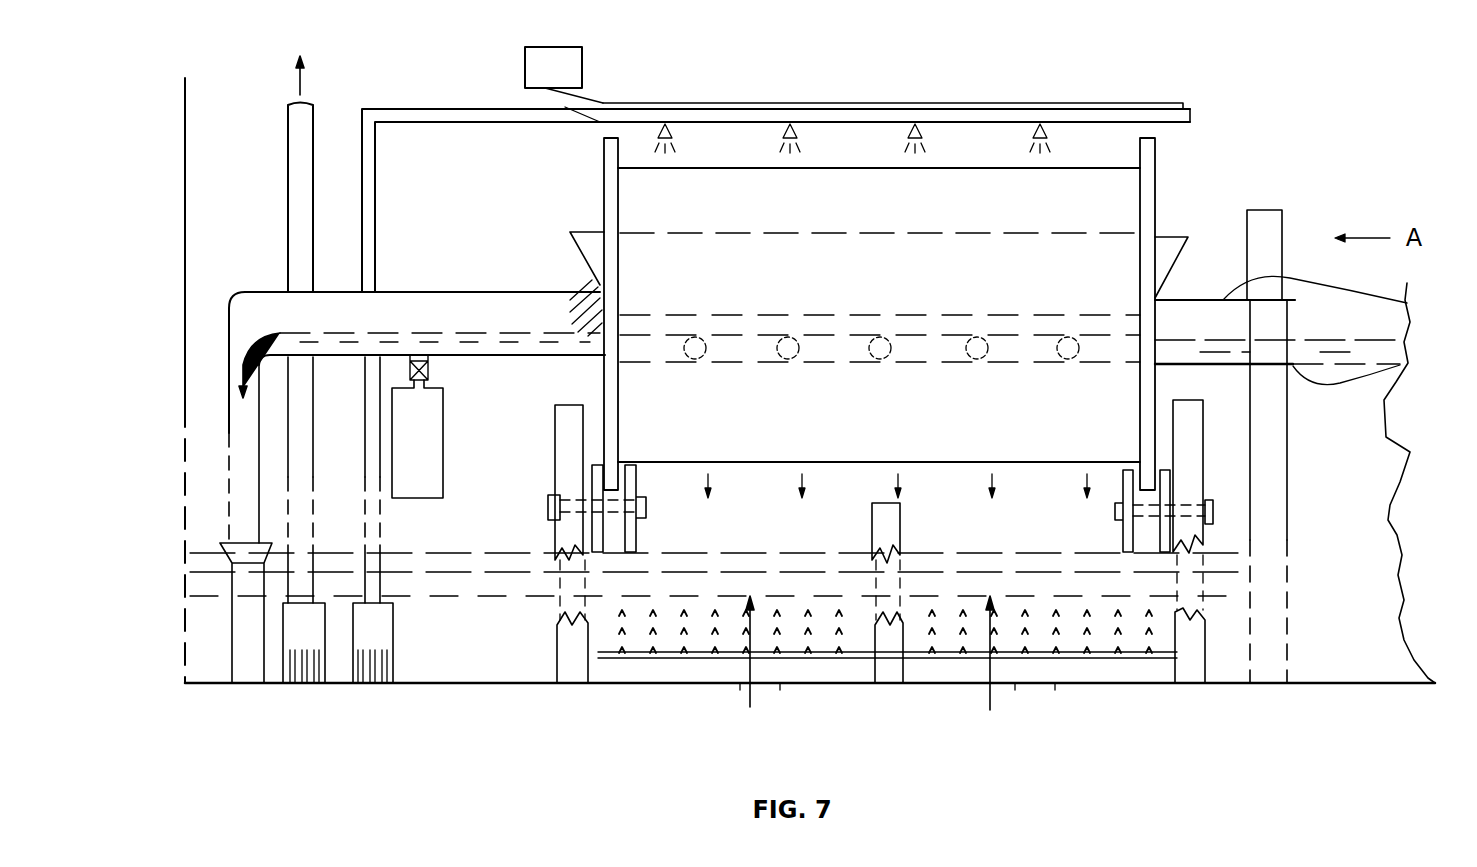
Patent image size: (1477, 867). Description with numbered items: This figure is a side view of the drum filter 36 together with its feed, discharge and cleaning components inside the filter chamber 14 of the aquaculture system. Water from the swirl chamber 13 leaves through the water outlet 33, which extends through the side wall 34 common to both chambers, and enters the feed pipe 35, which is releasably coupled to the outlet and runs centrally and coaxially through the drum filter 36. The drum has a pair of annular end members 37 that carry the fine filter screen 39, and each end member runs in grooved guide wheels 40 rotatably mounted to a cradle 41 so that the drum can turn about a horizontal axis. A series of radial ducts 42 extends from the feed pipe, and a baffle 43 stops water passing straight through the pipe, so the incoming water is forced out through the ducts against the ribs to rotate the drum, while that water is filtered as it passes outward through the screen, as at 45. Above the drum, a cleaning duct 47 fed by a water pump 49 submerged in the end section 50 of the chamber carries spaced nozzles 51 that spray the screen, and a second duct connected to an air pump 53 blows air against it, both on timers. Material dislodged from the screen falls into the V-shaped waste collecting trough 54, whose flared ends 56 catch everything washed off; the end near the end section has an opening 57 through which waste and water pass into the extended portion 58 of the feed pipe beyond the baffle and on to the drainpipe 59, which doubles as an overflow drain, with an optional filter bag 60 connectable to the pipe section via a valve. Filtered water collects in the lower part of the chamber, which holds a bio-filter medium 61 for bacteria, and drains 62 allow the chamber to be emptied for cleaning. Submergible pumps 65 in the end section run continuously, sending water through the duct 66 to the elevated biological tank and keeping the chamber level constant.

The swirl chamber 13 is at (1377, 515).
The filter chamber 14 is at (187, 318).
The water outlet 33 is at (1403, 363).
The side wall 34 is at (1277, 447).
The feed pipe 35 is at (1407, 305).
The drum filter 36 is at (1192, 145).
The annular end members 37 is at (1160, 148).
The filter screen 39 is at (1088, 182).
The guide wheels 40 is at (1135, 560).
The cradle 41 is at (1203, 645).
The radial ducts 42 is at (878, 342).
The baffle 43 is at (600, 350).
The filtered water flow 45 is at (961, 530).
The water cleaning duct 47 is at (960, 108).
The water pump 49 is at (368, 683).
The end section 50 is at (236, 240).
The nozzles 51 is at (1052, 125).
The air pump 53 is at (575, 70).
The waste collecting trough 54 is at (719, 228).
The trough ends 56 is at (1187, 252).
The opening 57 is at (585, 292).
The extended portion of feed pipe 58 is at (252, 290).
The drainpipe 59 is at (252, 683).
The filter bag 60 is at (418, 485).
The bio-filter medium 61 is at (660, 640).
The drains 62 is at (1036, 728).
The submergible pumps 65 is at (312, 683).
The duct 66 is at (288, 110).